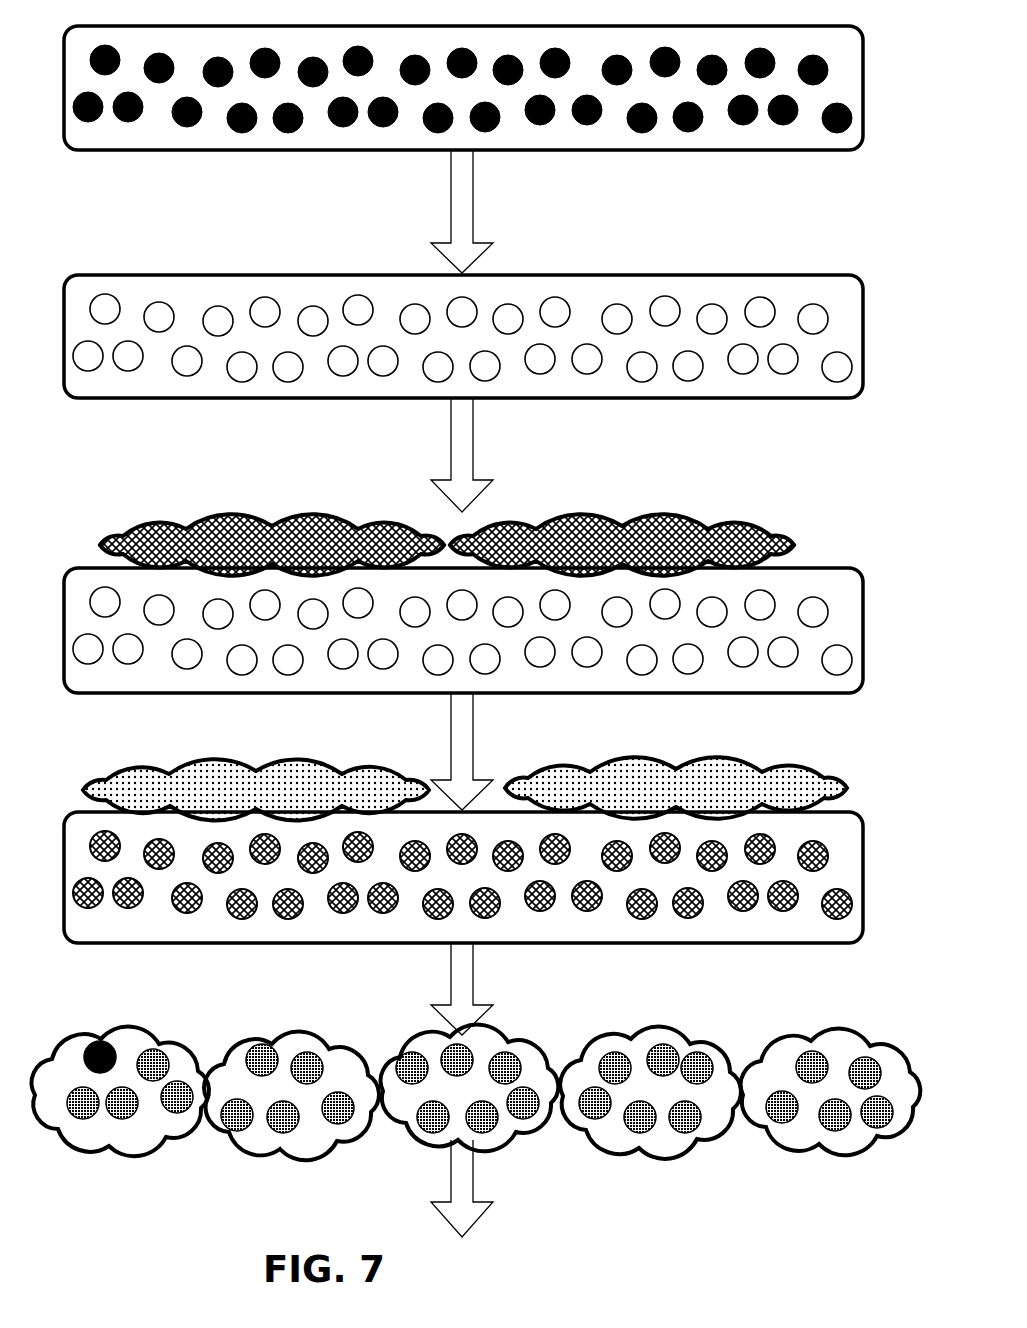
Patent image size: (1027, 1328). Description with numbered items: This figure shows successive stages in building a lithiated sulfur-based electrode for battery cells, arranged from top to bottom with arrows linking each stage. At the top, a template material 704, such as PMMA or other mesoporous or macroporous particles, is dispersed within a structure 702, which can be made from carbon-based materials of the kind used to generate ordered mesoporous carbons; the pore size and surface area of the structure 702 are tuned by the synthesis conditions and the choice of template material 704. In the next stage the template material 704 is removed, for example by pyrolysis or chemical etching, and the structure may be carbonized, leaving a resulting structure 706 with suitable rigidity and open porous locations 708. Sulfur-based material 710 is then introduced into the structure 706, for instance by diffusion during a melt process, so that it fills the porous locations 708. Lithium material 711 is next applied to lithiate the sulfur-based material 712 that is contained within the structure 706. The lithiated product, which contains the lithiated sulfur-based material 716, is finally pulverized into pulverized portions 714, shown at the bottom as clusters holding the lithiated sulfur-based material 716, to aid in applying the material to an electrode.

The structure 702 is at (845, 37).
The template material 704 is at (663, 50).
The resulting structure 706 is at (840, 284).
The porous locations 708 is at (712, 303).
The sulfur-based material 710 is at (747, 534).
The lithium material 711 is at (780, 771).
The sulfur-based material 712 is at (765, 851).
The pulverized portions 714 is at (870, 1044).
The lithiated sulfur-based material 716 is at (793, 1099).